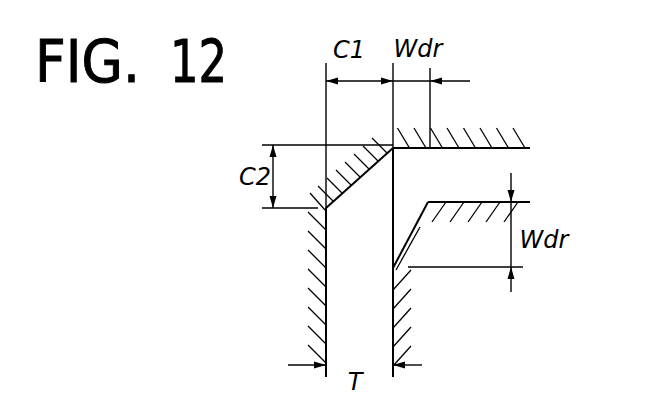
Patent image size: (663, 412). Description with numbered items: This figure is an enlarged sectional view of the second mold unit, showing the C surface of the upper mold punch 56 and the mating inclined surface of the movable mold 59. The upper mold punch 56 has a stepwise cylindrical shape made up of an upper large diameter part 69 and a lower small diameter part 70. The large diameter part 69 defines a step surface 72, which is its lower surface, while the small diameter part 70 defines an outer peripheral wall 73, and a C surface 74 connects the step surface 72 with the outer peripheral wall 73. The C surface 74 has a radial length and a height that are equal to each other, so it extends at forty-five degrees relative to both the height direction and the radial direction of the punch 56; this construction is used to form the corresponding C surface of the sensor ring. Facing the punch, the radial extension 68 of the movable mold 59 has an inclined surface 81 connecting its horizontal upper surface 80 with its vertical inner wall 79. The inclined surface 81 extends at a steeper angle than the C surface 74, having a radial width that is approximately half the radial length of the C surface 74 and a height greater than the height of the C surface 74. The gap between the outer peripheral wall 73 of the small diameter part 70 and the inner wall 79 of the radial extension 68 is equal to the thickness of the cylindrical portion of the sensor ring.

The upper mold punch 56 is at (167, 230).
The movable mold 59 is at (519, 376).
The radial extension 68 is at (430, 301).
The upper large diameter part 69 is at (509, 119).
The lower small diameter part 70 is at (296, 288).
The step surface 72 is at (452, 142).
The outer peripheral wall 73 is at (326, 262).
The C surface 74 is at (366, 184).
The vertical inner wall 79 is at (395, 322).
The horizontal upper surface 80 is at (485, 203).
The inclined surface 81 is at (416, 228).